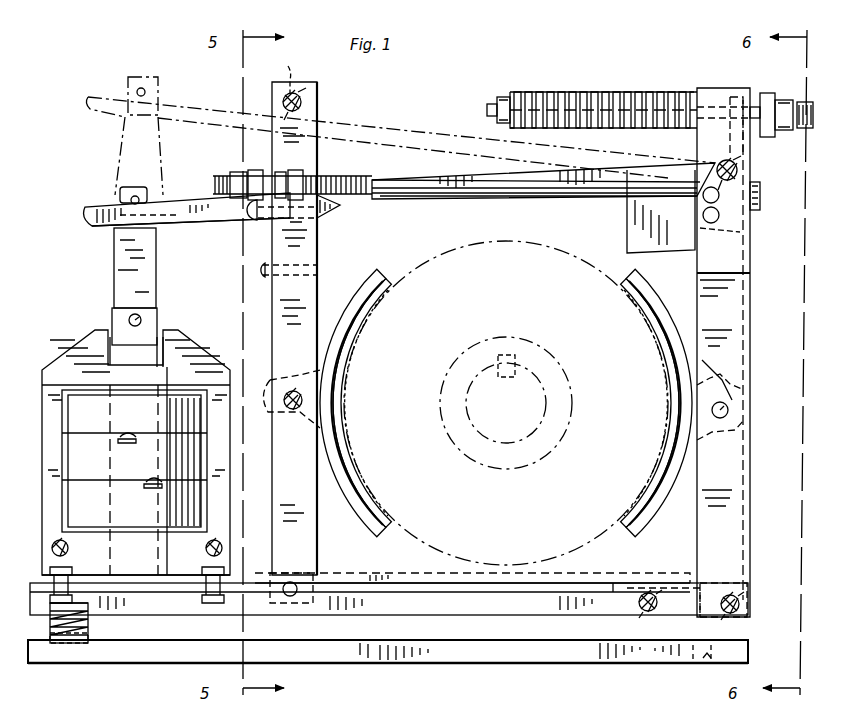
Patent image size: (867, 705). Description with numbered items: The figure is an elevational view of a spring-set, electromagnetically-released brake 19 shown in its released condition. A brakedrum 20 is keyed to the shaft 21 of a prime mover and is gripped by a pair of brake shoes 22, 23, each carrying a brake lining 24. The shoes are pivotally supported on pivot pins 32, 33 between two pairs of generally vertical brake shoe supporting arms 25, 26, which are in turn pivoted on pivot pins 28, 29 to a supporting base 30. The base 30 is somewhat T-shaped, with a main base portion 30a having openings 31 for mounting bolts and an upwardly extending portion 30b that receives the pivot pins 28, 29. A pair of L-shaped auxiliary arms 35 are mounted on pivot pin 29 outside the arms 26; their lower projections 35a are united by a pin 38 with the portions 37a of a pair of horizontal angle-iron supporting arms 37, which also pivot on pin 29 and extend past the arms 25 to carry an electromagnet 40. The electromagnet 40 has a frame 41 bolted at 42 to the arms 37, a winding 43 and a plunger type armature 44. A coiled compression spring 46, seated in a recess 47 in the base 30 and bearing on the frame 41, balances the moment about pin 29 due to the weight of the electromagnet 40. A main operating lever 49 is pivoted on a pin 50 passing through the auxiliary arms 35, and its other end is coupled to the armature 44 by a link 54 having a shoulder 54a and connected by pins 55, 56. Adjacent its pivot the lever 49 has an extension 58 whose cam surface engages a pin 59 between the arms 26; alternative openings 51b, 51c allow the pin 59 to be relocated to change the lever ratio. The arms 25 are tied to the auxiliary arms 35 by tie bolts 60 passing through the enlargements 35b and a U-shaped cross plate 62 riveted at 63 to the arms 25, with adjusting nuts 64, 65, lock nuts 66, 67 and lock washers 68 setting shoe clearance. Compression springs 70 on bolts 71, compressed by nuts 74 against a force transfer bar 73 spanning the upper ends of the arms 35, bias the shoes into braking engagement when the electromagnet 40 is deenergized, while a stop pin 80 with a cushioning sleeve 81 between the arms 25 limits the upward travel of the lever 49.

The brake 19 is at (400, 685).
The brakedrum 20 is at (442, 252).
The shaft 21 is at (526, 440).
The brake shoe 22 is at (366, 287).
The brake shoe 23 is at (640, 294).
The brake lining 24 is at (392, 274).
The brake shoe supporting arms 25 is at (298, 328).
The brake shoe supporting arms 26 is at (751, 297).
The pivot pin 28 is at (290, 582).
The pivot pin 29 is at (740, 605).
The supporting base 30 is at (522, 668).
The main base portion 30a is at (618, 659).
The upwardly extending portion 30b is at (348, 576).
The openings 31 is at (707, 664).
The pivot pin 32 is at (290, 388).
The pivot pin 33 is at (740, 402).
The auxiliary arms 35 is at (751, 337).
The projections 35a is at (665, 588).
The enlargement 35b is at (752, 232).
The supporting arms 37 is at (176, 600).
The portion 37a is at (718, 580).
The pin 38 is at (648, 592).
The electromagnet 40 is at (146, 466).
The frame 41 is at (218, 500).
The bolts 42 is at (68, 563).
The winding 43 is at (200, 460).
The plunger type armature 44 is at (157, 330).
The spring 46 is at (90, 624).
The recess 47 is at (60, 630).
The main operating lever 49 is at (172, 198).
The pin 50 is at (715, 168).
The opening 51b is at (752, 250).
The opening 51c is at (762, 186).
The link 54 is at (115, 260).
The shoulder 54a is at (160, 225).
The pin 55 is at (130, 320).
The pin 56 is at (130, 199).
The extension 58 is at (626, 216).
The pin 59 is at (720, 200).
The tie bolts 60 is at (378, 179).
The cross plate 62 is at (262, 265).
The rivets 63 is at (332, 210).
The adjusting nut 64 is at (256, 212).
The adjusting nut 65 is at (277, 172).
The lock nut 66 is at (238, 172).
The lock nut 67 is at (303, 175).
The lock washers 68 is at (252, 157).
The compression springs 70 is at (523, 90).
The bolt 71 is at (647, 90).
The force transfer bar 73 is at (767, 93).
The nuts 74 is at (504, 96).
The pin 80 is at (294, 90).
The sleeve 81 is at (278, 70).